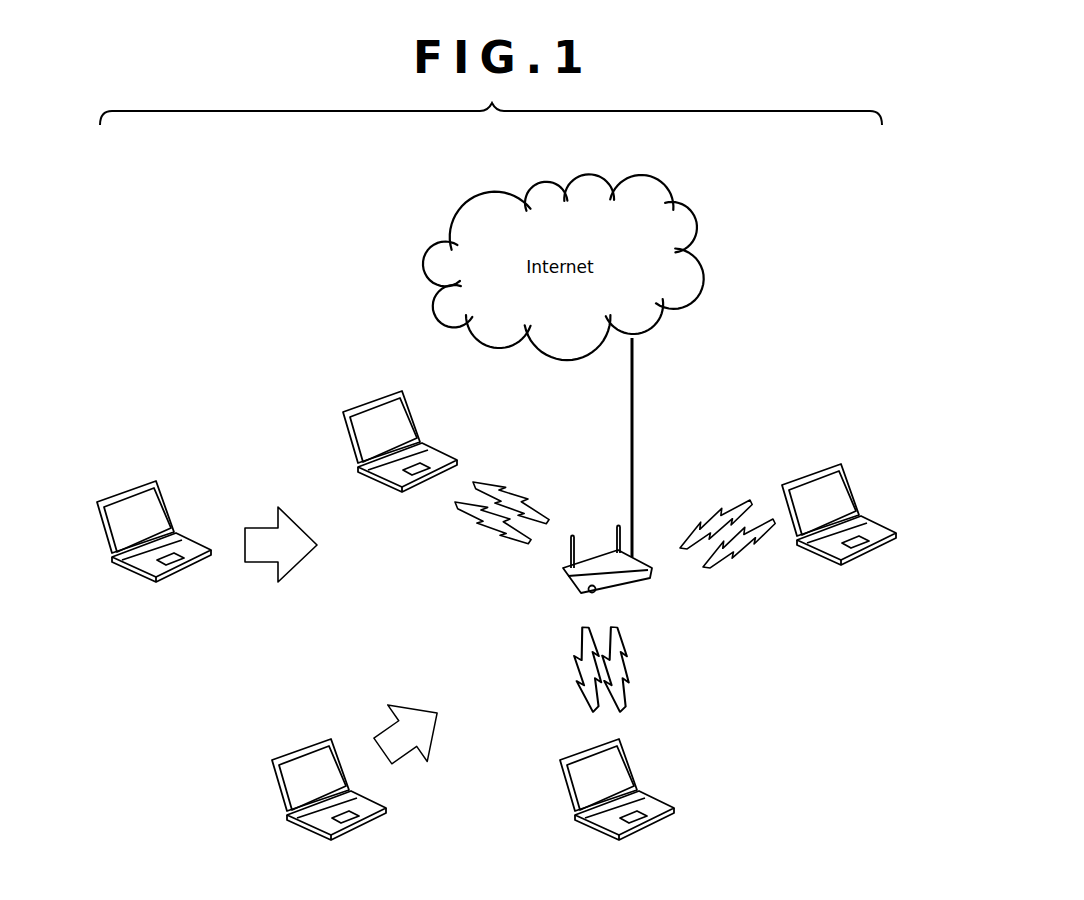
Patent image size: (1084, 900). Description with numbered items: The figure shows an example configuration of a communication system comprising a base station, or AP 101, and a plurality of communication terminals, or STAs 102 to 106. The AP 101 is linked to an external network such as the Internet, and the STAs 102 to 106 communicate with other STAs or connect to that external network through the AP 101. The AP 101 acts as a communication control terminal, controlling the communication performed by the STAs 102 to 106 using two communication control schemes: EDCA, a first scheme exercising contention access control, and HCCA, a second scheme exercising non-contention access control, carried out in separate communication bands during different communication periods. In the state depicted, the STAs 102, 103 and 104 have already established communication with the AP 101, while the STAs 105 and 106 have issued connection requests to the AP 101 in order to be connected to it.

The base station (AP) 101 is at (636, 588).
The communication terminal (STA) 102 is at (626, 754).
The communication terminal (STA) 103 is at (358, 410).
The communication terminal (STA) 104 is at (810, 476).
The communication terminal (STA) 105 is at (137, 495).
The communication terminal (STA) 106 is at (297, 753).